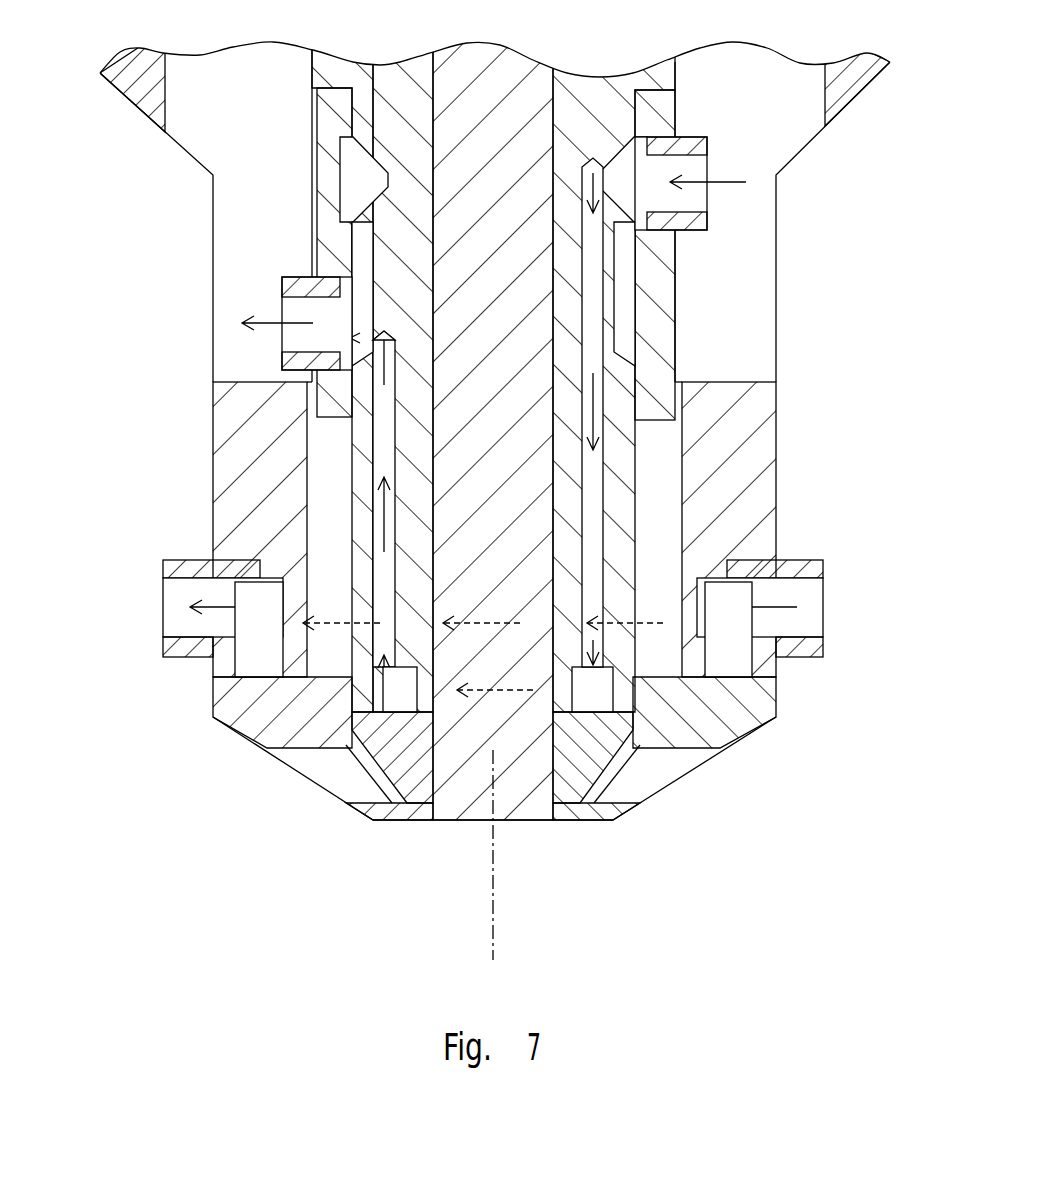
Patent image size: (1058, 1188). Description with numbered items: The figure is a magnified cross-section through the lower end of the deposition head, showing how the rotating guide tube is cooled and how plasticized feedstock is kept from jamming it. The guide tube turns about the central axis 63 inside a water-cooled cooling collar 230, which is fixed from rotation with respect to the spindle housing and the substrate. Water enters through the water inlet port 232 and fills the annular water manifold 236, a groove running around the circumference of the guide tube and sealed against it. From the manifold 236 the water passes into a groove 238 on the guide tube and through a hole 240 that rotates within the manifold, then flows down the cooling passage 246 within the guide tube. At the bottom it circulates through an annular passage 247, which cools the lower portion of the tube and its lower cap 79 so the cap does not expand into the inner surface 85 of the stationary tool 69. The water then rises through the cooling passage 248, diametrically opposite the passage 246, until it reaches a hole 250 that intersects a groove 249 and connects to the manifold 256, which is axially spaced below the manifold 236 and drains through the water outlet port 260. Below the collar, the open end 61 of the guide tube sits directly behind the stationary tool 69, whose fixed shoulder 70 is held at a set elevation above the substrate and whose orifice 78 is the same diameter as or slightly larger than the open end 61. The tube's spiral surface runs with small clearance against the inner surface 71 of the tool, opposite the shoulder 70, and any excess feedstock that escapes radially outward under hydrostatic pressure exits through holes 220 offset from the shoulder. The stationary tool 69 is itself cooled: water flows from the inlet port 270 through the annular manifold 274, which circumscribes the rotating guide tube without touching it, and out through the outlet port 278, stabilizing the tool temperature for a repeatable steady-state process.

The open end 61 is at (455, 803).
The axis 63 is at (493, 918).
The stationary tool 69 is at (768, 702).
The shoulder 70 is at (405, 823).
The inner surface 71 is at (383, 793).
The orifice 78 is at (557, 823).
The lower cap 79 is at (613, 757).
The inner surface 85 is at (700, 700).
The holes 220 is at (333, 772).
The cooling collar 230 is at (700, 331).
The water inlet port 232 is at (707, 157).
The annular water manifold 236 is at (740, 43).
The groove 238 is at (705, 212).
The hole 240 is at (593, 158).
The cooling passage 246 is at (598, 545).
The annular passage 247 is at (388, 700).
The cooling passage 248 is at (387, 460).
The groove 249 is at (378, 333).
The hole 250 is at (388, 332).
The manifold 256 is at (347, 287).
The water outlet port 260 is at (297, 310).
The inlet port 270 is at (802, 593).
The annular manifold 274 is at (258, 660).
The outlet port 278 is at (183, 597).